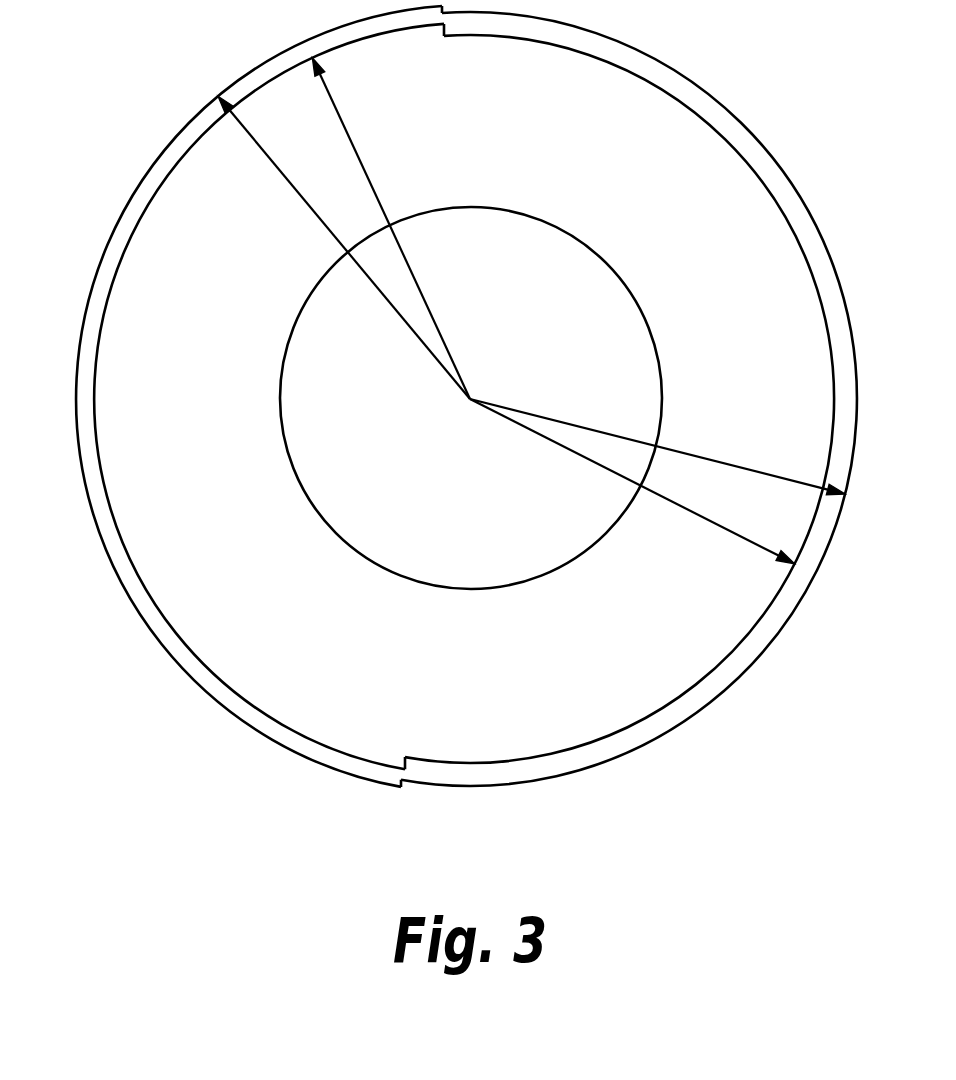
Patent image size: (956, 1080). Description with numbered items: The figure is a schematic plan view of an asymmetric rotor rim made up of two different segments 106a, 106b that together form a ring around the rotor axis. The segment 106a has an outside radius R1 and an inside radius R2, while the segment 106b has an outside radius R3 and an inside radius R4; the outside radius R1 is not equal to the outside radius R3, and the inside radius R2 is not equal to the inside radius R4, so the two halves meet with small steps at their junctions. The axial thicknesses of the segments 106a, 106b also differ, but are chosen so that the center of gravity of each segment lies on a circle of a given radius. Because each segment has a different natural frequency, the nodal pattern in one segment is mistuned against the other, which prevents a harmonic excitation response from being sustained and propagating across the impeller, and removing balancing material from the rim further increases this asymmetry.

The rim segment 106a is at (167, 147).
The rim segment 106b is at (702, 707).
The outside radius R1 is at (344, 247).
The inside radius R2 is at (391, 228).
The outside radius R3 is at (657, 457).
The inside radius R4 is at (632, 481).